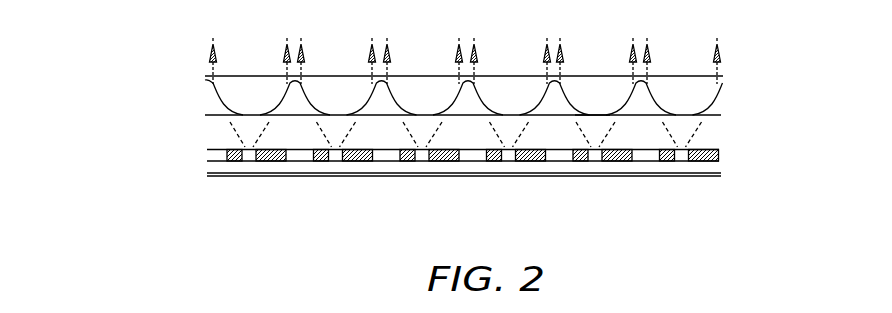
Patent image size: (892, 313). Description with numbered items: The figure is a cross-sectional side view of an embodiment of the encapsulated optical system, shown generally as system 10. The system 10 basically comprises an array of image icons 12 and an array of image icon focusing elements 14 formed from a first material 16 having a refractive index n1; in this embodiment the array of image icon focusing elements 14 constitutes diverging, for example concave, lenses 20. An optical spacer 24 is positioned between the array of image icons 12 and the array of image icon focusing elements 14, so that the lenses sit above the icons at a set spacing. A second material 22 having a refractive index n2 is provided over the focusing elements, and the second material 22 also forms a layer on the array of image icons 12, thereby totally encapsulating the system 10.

The system 10 is at (111, 116).
The array of image icons 12 is at (726, 157).
The array of image icon focusing elements 14 is at (727, 102).
The first material 16 is at (386, 106).
The diverging lenses 20 is at (588, 108).
The second material 22 is at (313, 96).
The optical spacer 24 is at (225, 133).